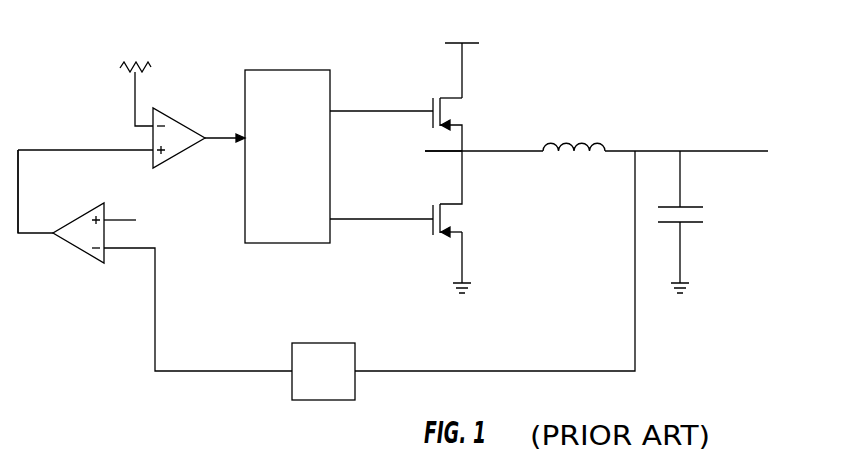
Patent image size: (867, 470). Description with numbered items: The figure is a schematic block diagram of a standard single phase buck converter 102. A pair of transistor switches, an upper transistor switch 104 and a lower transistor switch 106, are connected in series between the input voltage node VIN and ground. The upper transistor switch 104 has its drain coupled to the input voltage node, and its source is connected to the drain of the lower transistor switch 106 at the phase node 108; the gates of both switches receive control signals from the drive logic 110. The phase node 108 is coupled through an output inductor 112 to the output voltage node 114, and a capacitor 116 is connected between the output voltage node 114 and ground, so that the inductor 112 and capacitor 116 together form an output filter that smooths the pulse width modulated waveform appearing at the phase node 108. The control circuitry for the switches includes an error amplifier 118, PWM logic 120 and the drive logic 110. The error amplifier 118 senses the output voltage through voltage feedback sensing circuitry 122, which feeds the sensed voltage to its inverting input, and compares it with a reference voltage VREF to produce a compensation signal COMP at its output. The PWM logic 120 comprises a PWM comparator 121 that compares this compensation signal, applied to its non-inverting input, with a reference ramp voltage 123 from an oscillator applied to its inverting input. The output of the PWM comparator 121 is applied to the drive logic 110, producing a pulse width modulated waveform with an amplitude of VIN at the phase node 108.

The single phase buck converter 102 is at (656, 61).
The upper transistor switch 104 is at (465, 110).
The lower transistor switch 106 is at (465, 220).
The phase node 108 is at (428, 153).
The drive logic 110 is at (298, 70).
The output inductor 112 is at (585, 135).
The output voltage node 114 is at (680, 150).
The capacitor 116 is at (708, 213).
The error amplifier 118 is at (88, 255).
The PWM logic 120 is at (133, 183).
The PWM comparator 121 is at (172, 157).
The voltage feedback sensing circuitry 122 is at (341, 343).
The reference ramp voltage 123 is at (142, 62).